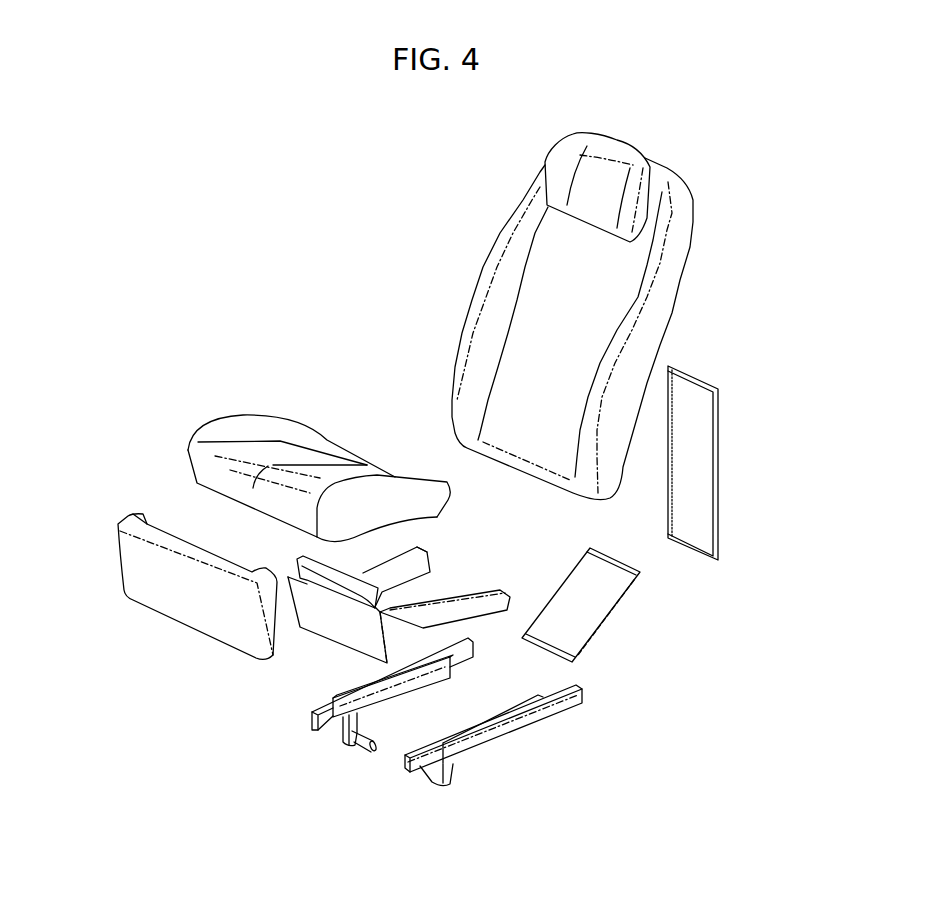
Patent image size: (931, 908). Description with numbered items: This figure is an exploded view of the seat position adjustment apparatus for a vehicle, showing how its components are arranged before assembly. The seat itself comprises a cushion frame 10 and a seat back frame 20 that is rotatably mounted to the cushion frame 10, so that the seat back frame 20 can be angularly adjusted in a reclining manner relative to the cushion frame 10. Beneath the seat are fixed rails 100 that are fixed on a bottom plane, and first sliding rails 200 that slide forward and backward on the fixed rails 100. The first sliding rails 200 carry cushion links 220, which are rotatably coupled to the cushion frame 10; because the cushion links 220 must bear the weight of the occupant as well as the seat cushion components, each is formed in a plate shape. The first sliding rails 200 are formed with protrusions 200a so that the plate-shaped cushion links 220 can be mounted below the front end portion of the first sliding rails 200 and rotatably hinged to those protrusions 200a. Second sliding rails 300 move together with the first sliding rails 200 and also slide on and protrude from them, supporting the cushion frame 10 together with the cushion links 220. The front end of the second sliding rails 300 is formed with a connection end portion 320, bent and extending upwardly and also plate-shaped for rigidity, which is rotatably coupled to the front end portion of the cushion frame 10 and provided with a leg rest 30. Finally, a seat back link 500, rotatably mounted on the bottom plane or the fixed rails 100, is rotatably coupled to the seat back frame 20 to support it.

The cushion frame 10 is at (272, 450).
The seat back frame 20 is at (497, 295).
The leg rest 30 is at (150, 570).
The fixed rails 100 is at (540, 717).
The first sliding rails 200 is at (312, 723).
The protrusions 200a is at (340, 741).
The cushion links 220 is at (590, 608).
The second sliding rails 300 is at (408, 550).
The connection end portion 320 is at (340, 630).
The seat back link 500 is at (693, 463).